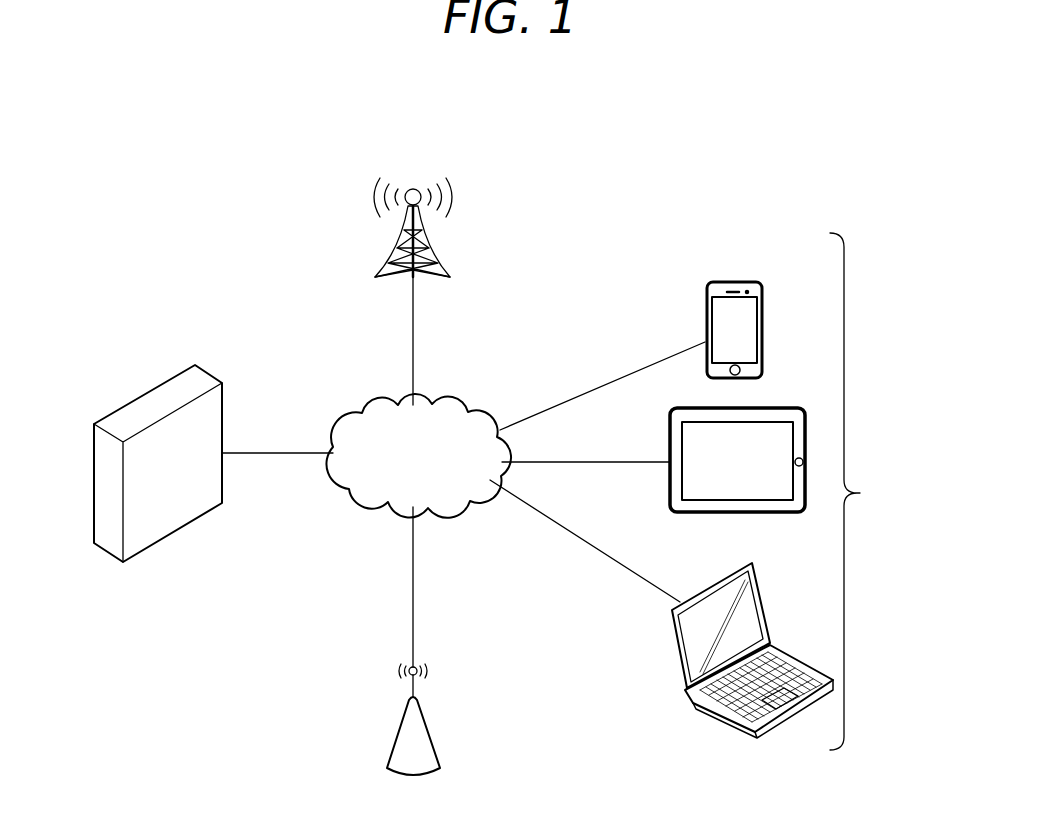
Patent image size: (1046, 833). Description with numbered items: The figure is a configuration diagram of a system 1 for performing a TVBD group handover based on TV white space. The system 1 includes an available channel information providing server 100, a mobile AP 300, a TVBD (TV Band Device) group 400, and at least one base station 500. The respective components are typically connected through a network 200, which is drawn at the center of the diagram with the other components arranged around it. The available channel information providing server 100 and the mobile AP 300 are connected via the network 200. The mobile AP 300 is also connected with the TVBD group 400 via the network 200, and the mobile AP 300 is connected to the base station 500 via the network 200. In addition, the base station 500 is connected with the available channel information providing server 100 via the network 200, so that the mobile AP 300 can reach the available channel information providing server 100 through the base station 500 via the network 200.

The system 1 is at (594, 205).
The available channel information providing server 100 is at (160, 379).
The network 200 is at (441, 401).
The mobile AP 300 is at (432, 733).
The TVBD group 400 is at (788, 491).
The base station 500 is at (432, 248).